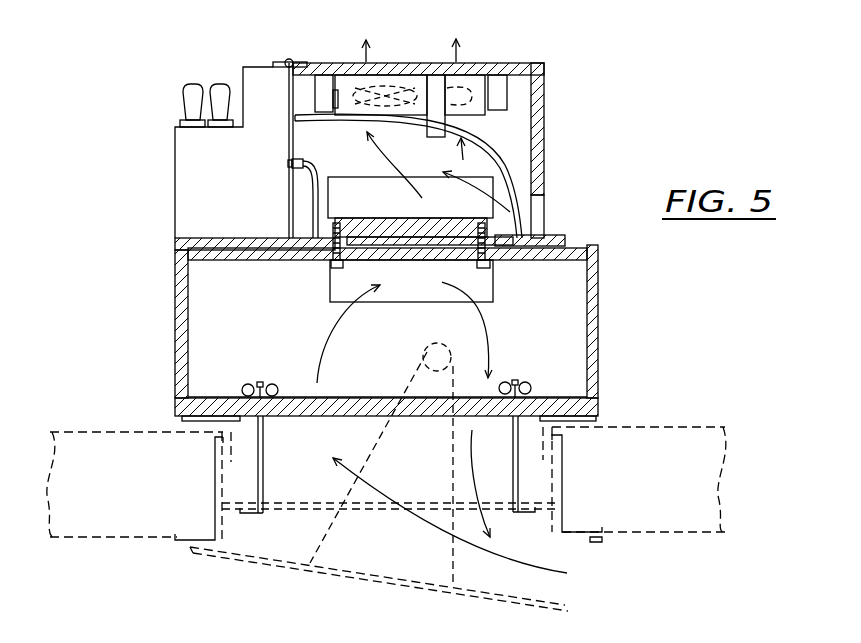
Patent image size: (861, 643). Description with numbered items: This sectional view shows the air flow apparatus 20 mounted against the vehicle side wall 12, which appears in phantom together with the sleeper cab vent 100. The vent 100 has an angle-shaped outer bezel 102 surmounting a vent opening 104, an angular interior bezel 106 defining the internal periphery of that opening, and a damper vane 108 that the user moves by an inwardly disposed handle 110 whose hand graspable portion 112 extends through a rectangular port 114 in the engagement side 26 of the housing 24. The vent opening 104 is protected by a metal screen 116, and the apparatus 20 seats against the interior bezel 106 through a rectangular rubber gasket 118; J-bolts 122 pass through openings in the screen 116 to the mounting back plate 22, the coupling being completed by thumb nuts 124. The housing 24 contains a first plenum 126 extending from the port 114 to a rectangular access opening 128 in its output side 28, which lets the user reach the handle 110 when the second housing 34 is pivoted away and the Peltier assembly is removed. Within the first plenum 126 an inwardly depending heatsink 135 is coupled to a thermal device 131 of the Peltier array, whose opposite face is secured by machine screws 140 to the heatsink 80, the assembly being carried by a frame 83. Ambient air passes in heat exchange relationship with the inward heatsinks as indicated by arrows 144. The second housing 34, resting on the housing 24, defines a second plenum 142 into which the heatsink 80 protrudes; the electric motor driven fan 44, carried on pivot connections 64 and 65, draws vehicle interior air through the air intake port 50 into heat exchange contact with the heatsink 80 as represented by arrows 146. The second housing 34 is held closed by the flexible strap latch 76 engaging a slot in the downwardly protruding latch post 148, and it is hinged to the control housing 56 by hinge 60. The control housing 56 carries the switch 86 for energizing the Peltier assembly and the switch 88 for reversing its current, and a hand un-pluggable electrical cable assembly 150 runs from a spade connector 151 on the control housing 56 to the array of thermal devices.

The side wall 12 is at (693, 470).
The air flow apparatus 20 is at (737, 70).
The mounting back plate 22 is at (598, 407).
The housing 24 is at (677, 325).
The engagement side 26 is at (755, 383).
The output side 28 is at (605, 248).
The second housing 34 is at (614, 137).
The electric motor driven fan 44 is at (387, 98).
The air intake port 50 is at (538, 205).
The control housing 56 is at (176, 184).
The hinge 60 is at (288, 59).
The pivot connection 64 is at (326, 87).
The pivot connection 65 is at (490, 80).
The strap latch 76 is at (502, 143).
The heatsink 80 is at (362, 190).
The frame 83 is at (322, 240).
The switch 86 is at (191, 97).
The switch 88 is at (221, 88).
The vent 100 is at (227, 576).
The outer bezel 102 is at (591, 544).
The vent opening 104 is at (313, 516).
The interior bezel 106 is at (200, 436).
The damper vane 108 is at (370, 581).
The handle 110 is at (410, 381).
The hand graspable portion 112 is at (428, 350).
The rectangular port 114 is at (300, 398).
The metal screen 116 is at (500, 510).
The rubber gasket 118 is at (180, 417).
The J-bolts 122 is at (265, 450).
The thumb nuts 124 is at (253, 384).
The first plenum 126 is at (217, 298).
The access opening 128 is at (331, 260).
The thermal device 131 is at (408, 302).
The heatsink 135 is at (493, 290).
The machine screws 140 is at (328, 292).
The second plenum 142 is at (512, 120).
The arrows 144 is at (324, 332).
The arrows 146 is at (383, 162).
The latch post 148 is at (437, 86).
The electrical cable assembly 150 is at (312, 201).
The spade connector 151 is at (291, 163).